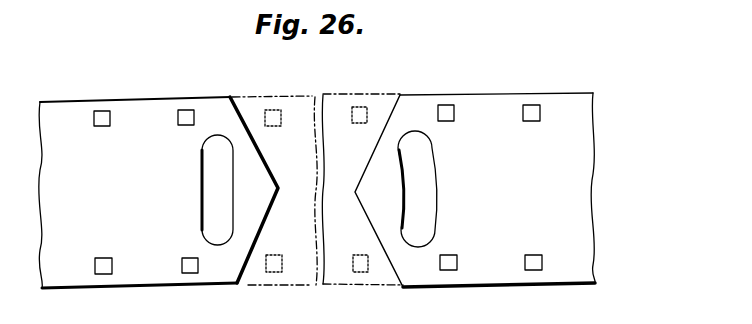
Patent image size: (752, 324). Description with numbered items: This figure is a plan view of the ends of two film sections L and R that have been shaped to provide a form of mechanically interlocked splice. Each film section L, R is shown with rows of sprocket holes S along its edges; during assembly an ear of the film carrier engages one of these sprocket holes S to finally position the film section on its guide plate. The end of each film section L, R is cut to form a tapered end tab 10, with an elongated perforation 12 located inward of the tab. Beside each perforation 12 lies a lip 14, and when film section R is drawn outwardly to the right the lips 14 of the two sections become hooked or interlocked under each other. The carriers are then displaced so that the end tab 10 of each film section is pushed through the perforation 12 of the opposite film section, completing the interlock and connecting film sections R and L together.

The film section L is at (140, 107).
The film section R is at (578, 222).
The sprocket hole S is at (182, 275).
The end tab 10 is at (265, 218).
The perforation 12 is at (212, 172).
The lip 14 is at (232, 197).